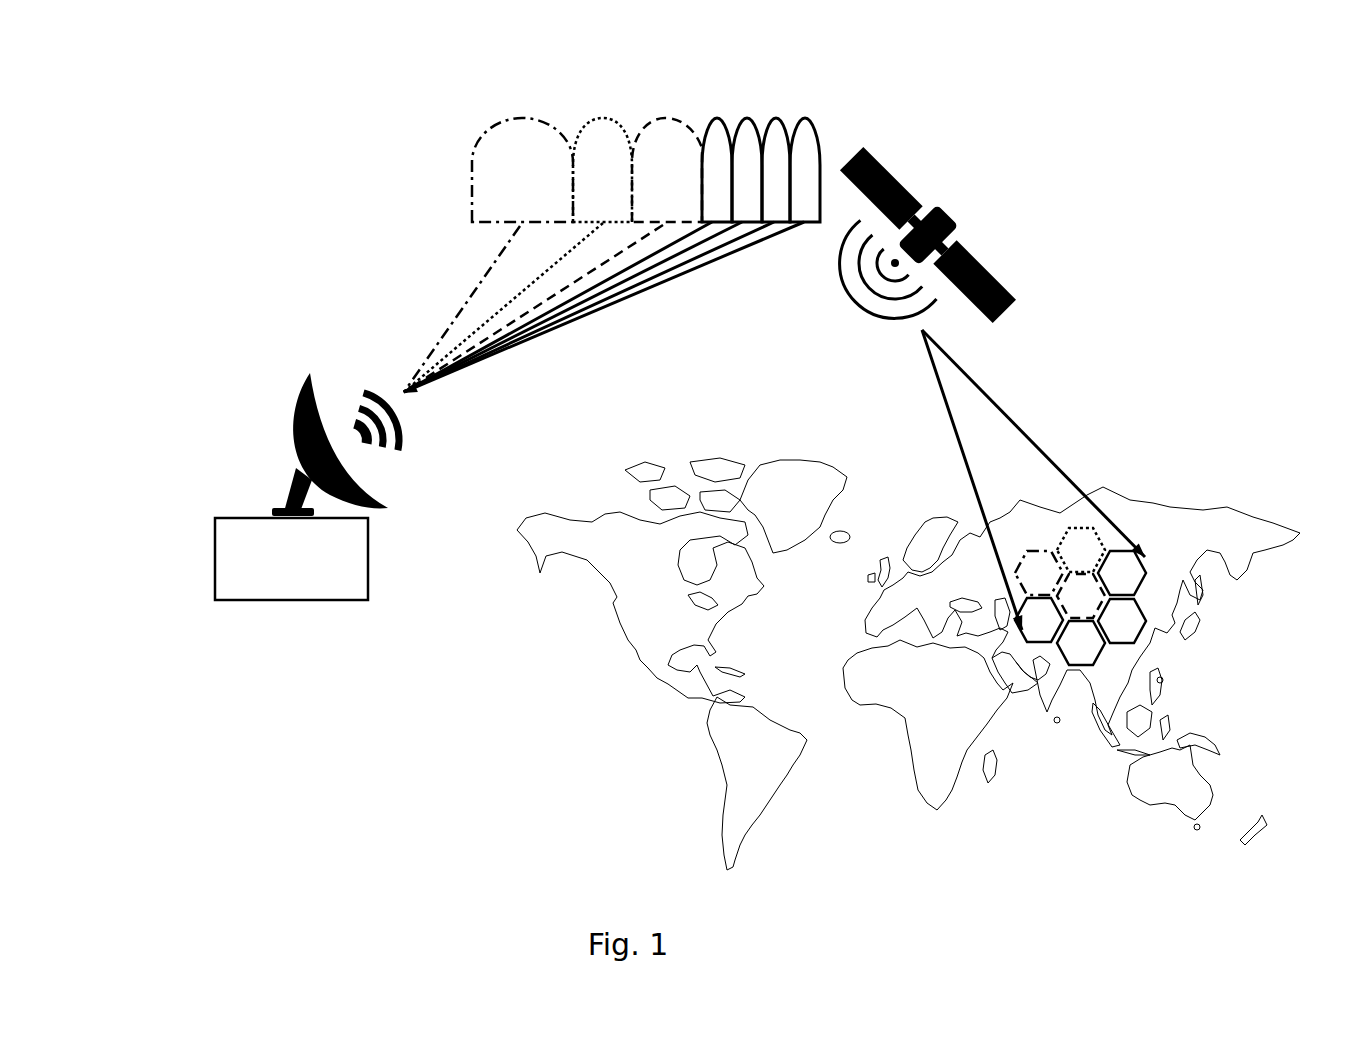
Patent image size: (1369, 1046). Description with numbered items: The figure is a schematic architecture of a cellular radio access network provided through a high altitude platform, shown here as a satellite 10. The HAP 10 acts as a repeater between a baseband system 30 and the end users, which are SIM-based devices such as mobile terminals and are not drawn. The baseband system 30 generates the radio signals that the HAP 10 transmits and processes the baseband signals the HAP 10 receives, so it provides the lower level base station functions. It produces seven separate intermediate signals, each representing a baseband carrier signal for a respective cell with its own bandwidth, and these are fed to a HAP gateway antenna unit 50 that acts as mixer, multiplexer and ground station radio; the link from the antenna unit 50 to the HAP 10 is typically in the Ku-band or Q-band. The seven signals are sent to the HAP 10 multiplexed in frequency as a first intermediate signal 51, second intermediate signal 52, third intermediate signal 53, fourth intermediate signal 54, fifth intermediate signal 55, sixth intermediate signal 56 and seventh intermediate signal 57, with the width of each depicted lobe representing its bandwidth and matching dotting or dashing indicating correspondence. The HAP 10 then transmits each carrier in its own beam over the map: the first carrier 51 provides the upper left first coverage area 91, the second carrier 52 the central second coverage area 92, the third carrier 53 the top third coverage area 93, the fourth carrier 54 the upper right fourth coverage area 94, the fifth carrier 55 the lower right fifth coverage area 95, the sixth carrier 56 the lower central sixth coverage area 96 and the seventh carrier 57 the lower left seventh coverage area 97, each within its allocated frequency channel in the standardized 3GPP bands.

The HAP (satellite) 10 is at (971, 219).
The baseband system 30 is at (291, 559).
The HAP gateway antenna unit 50 is at (268, 440).
The first intermediate signal 51 is at (488, 236).
The second intermediate signal 52 is at (518, 236).
The third intermediate signal 53 is at (553, 236).
The fourth intermediate signal 54 is at (568, 236).
The fifth intermediate signal 55 is at (750, 105).
The sixth intermediate signal 56 is at (598, 236).
The seventh intermediate signal 57 is at (808, 105).
The first coverage area 91 is at (1040, 552).
The second coverage area 92 is at (1083, 572).
The third coverage area 93 is at (1082, 528).
The fourth coverage area 94 is at (1145, 557).
The fifth coverage area 95 is at (1142, 638).
The sixth coverage area 96 is at (1080, 668).
The seventh coverage area 97 is at (1038, 643).